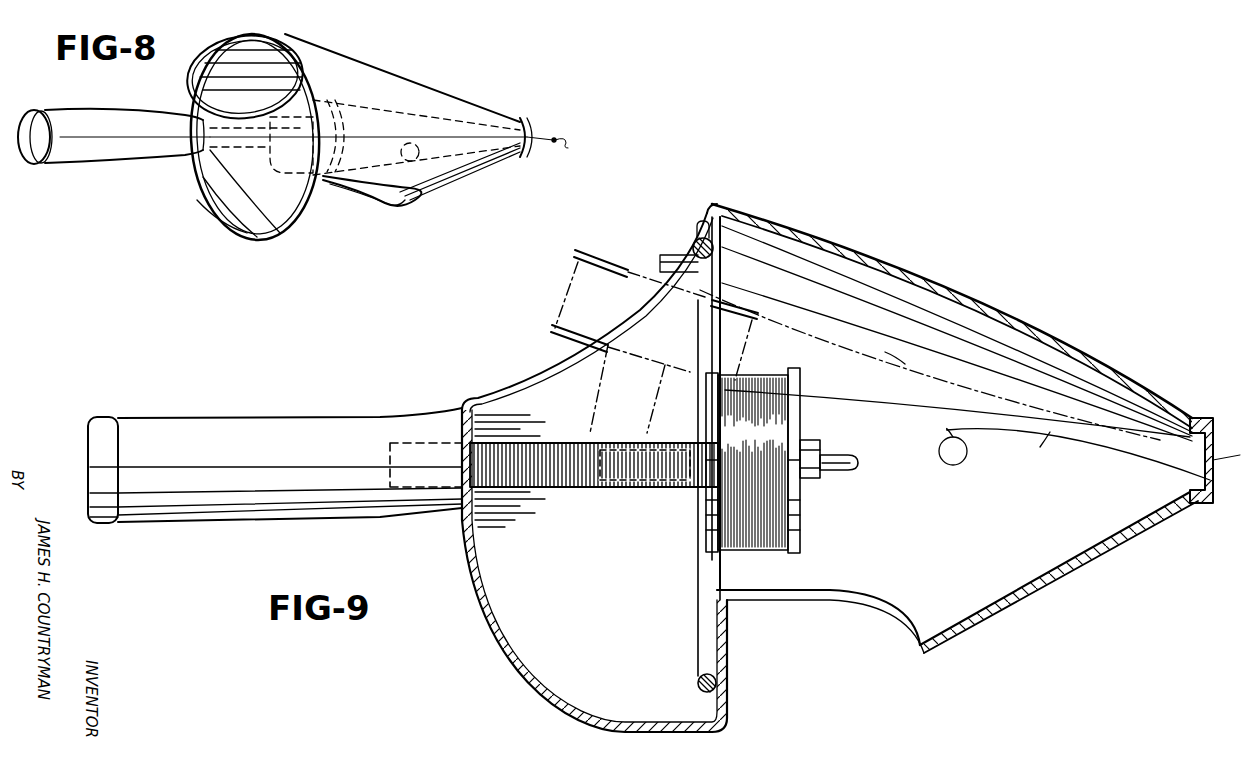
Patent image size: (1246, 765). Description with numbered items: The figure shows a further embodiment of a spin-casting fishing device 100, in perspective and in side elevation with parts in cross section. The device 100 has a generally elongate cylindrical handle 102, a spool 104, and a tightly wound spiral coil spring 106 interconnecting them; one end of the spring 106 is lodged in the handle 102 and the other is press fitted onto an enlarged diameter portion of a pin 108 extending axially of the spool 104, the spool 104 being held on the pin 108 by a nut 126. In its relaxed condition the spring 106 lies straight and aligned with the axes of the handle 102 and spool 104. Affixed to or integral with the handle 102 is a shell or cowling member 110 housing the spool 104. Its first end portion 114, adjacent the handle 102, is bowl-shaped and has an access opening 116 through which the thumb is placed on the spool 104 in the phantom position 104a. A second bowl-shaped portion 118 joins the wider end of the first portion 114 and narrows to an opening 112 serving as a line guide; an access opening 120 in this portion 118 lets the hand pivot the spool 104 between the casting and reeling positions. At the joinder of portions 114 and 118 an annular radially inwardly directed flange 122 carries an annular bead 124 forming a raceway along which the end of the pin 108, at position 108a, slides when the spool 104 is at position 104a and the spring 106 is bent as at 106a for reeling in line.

In FIG. 8, the fishing device 100 is at (412, 70).
In FIG. 9, the fishing device 100 is at (490, 337).
In FIG. 8, the handle 102 is at (72, 115).
In FIG. 9, the handle 102 is at (265, 420).
In FIG. 9, the spool 104 is at (795, 510).
In FIG. 9, the phantom-line position of spool 104a is at (580, 290).
In FIG. 9, the spring 106 is at (605, 490).
In FIG. 9, the bent position of spring 106a is at (605, 405).
In FIG. 9, the pin 108 is at (838, 465).
In FIG. 9, the reeling position of pin 108a is at (690, 245).
In FIG. 8, the shell or cowling member 110 is at (237, 260).
In FIG. 9, the shell or cowling member 110 is at (918, 253).
In FIG. 9, the opening 112 is at (1190, 418).
In FIG. 8, the first end portion 114 is at (225, 213).
In FIG. 9, the first end portion 114 is at (467, 545).
In FIG. 8, the access opening 116 is at (280, 60).
In FIG. 9, the access opening 116 is at (485, 397).
In FIG. 9, the second bowl-shaped portion 118 is at (1030, 335).
In FIG. 8, the access opening 120 is at (355, 198).
In FIG. 9, the access opening 120 is at (860, 625).
In FIG. 9, the annular radially inwardly directed flange 122 is at (720, 688).
In FIG. 9, the annular bead 124 is at (702, 630).
In FIG. 9, the nut 126 is at (805, 445).